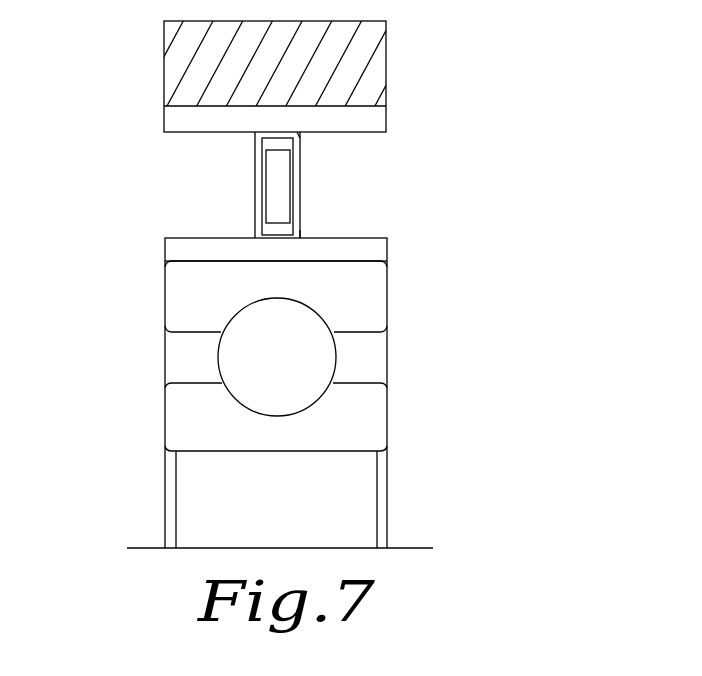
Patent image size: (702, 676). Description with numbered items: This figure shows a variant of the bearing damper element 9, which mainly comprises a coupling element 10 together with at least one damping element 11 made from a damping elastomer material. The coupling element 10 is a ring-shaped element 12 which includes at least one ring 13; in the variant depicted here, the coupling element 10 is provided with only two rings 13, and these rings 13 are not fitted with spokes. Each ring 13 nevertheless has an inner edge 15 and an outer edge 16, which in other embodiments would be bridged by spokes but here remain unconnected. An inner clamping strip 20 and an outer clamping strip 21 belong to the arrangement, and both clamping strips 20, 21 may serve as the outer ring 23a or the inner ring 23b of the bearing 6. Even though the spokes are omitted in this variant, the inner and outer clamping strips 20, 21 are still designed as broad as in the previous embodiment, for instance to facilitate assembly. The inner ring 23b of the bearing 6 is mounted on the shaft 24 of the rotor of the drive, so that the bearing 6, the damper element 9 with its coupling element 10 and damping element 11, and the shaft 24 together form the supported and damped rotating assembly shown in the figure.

The bearing 6 is at (445, 355).
The bearing damper element 9 is at (122, 120).
The coupling element 10 is at (338, 284).
The damping element 11 is at (275, 172).
The ring-shaped element 12 is at (457, 158).
The ring 13 is at (255, 183).
The inner edge 15 is at (300, 238).
The outer edge 16 is at (300, 133).
The inner clamping strip 20 is at (372, 248).
The outer clamping strip 21 is at (383, 113).
The outer ring 23a is at (367, 297).
The inner ring 23b is at (368, 425).
The shaft 24 is at (345, 487).